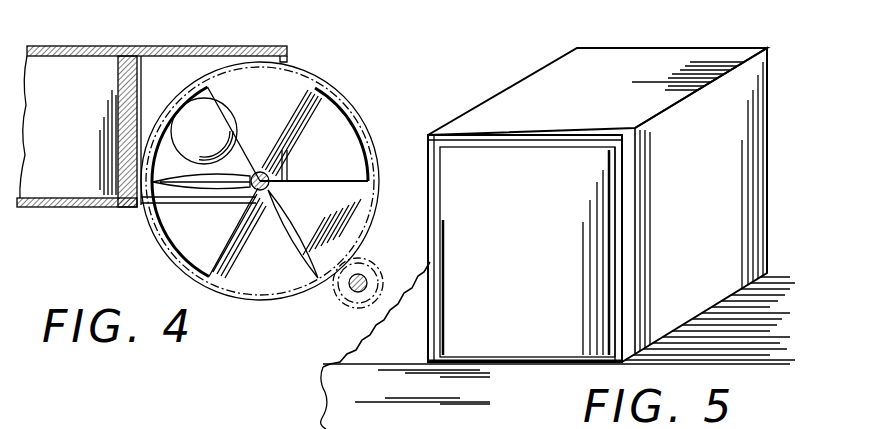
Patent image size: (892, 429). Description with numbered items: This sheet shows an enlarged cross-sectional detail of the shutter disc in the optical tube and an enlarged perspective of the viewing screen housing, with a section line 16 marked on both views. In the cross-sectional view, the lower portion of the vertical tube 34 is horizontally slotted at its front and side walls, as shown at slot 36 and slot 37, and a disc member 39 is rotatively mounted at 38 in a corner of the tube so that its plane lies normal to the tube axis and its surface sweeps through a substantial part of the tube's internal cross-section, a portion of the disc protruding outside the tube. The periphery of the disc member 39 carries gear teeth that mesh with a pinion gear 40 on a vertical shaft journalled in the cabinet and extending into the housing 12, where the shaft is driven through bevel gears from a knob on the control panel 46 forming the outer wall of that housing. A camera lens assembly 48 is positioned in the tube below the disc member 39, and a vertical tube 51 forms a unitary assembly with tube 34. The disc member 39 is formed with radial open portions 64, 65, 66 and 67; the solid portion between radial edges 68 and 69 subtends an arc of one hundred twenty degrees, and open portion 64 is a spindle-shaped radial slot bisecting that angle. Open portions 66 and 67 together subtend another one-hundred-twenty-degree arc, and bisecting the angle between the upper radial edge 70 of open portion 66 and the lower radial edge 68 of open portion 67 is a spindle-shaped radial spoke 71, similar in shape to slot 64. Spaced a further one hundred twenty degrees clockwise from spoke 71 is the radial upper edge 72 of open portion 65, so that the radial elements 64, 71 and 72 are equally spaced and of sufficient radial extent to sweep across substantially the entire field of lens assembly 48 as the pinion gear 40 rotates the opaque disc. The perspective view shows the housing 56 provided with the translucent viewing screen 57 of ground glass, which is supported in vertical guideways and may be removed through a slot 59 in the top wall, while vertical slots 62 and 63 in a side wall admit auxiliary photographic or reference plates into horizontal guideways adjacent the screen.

In FIG. 5, the housing 12 is at (326, 351).
In FIG. 4, the section line 16 is at (405, 252).
In FIG. 5, the section line 16 is at (660, 240).
In FIG. 4, the vertical tube 34 is at (283, 47).
In FIG. 4, the horizontal slot 36 is at (179, 198).
In FIG. 4, the horizontal slot 37 is at (284, 157).
In FIG. 4, the rotative mounting 38 is at (276, 175).
In FIG. 4, the disc member 39 is at (312, 77).
In FIG. 4, the pinion gear 40 is at (340, 289).
In FIG. 5, the control panel 46 is at (337, 377).
In FIG. 4, the camera lens assembly 48 is at (217, 143).
In FIG. 4, the vertical tube 51 is at (70, 46).
In FIG. 5, the housing 56 is at (633, 48).
In FIG. 5, the translucent viewing screen 57 is at (463, 313).
In FIG. 5, the slot 59 is at (470, 133).
In FIG. 5, the vertical slot 62 is at (638, 184).
In FIG. 5, the vertical slot 63 is at (646, 214).
In FIG. 4, the radial open portion 64 is at (283, 221).
In FIG. 4, the radial open portion 65 is at (373, 122).
In FIG. 4, the radial open portion 66 is at (160, 140).
In FIG. 4, the radial open portion 67 is at (187, 244).
In FIG. 4, the radial edge 68 is at (220, 252).
In FIG. 4, the radial edge 69 is at (333, 166).
In FIG. 4, the upper radial edge 70 is at (216, 102).
In FIG. 4, the radial spoke 71 is at (175, 179).
In FIG. 4, the radial upper edge 72 is at (303, 110).